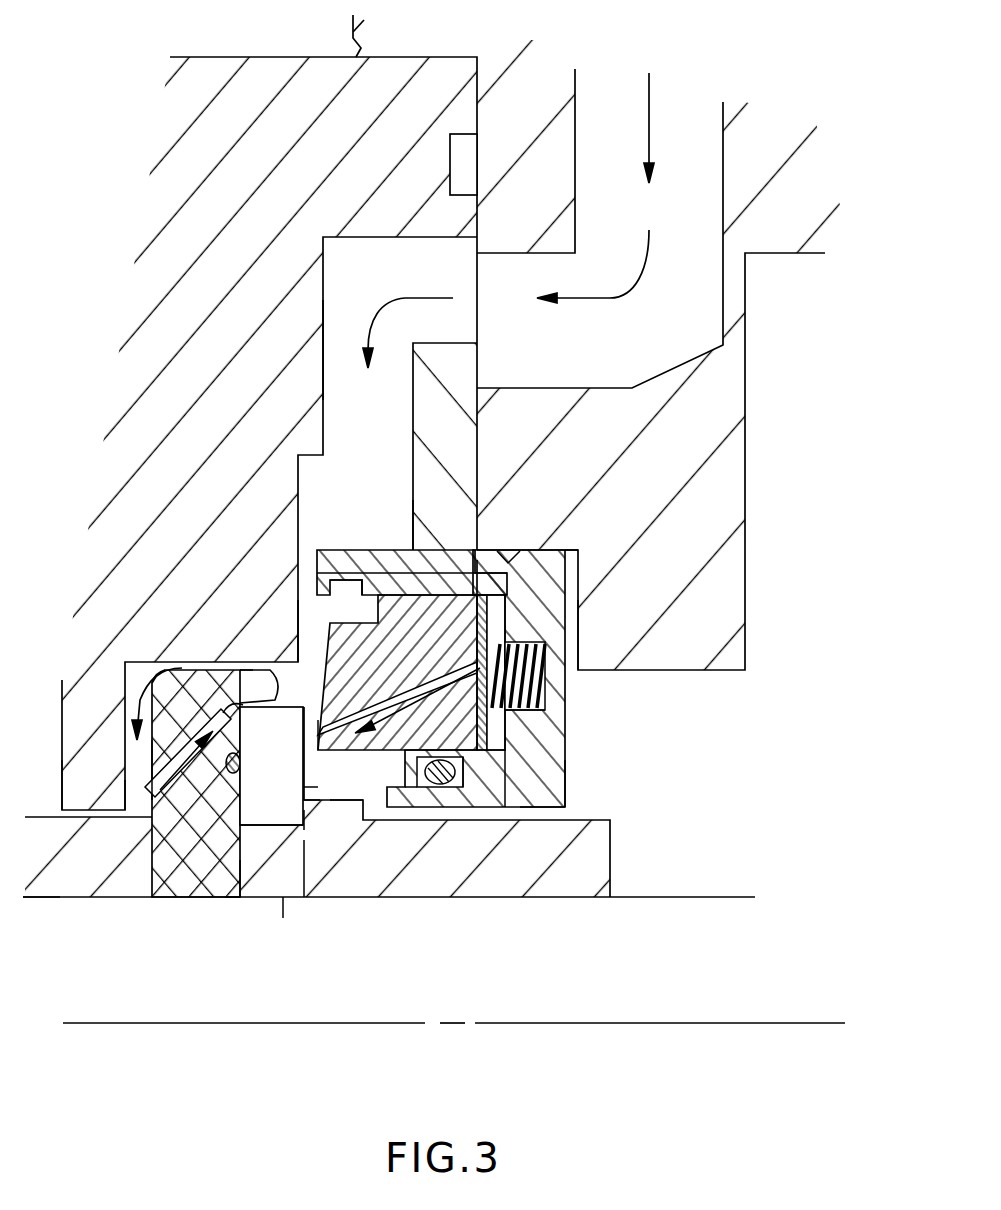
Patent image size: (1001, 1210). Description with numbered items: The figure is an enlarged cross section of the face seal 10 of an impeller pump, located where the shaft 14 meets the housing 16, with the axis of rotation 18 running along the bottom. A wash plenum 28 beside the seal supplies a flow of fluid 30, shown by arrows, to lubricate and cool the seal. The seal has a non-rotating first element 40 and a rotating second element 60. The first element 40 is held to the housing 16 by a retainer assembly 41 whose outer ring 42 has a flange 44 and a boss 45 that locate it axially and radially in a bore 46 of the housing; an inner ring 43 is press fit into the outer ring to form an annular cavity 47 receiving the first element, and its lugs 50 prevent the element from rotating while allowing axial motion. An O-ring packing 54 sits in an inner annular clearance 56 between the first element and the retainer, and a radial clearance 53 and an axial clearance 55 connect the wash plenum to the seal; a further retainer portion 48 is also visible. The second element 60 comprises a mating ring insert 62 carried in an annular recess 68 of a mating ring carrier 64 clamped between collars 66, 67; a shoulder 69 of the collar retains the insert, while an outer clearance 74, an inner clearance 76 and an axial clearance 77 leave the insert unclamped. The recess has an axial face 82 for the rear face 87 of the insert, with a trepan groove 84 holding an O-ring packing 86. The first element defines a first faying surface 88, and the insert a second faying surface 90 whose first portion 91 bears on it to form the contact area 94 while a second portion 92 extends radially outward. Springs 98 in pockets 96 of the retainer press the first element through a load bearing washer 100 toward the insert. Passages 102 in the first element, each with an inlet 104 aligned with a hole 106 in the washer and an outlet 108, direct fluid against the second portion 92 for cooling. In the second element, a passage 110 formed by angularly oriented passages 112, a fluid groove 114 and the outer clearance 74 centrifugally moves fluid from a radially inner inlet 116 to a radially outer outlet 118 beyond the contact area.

The face seal 10 is at (277, 700).
The shaft 14 is at (745, 897).
The housing 16 is at (745, 383).
The axis 18 is at (687, 1023).
The wash plenum 28 is at (384, 430).
The flow of fluid 30 is at (650, 108).
The first, non-rotating element 40 is at (404, 552).
The retainer assembly 41 is at (567, 763).
The outer ring 42 is at (567, 647).
The inner ring 43 is at (410, 513).
The flange 44 is at (470, 364).
The boss 45 is at (565, 548).
The bore 46 is at (514, 557).
The annular shaped cavity 47 is at (298, 634).
The lower flange 48 is at (555, 818).
The lugs 50 is at (367, 597).
The outer annular radial clearance 53 is at (478, 598).
The O-ring packing 54 is at (440, 787).
The annular axial clearance 55 is at (563, 783).
The inner annular clearance 56 is at (463, 757).
The second rotating element 60 is at (283, 940).
The mating ring insert 62 is at (277, 779).
The mating ring carrier 64 is at (191, 837).
The collar 66 is at (497, 820).
The collar 67 is at (37, 896).
The annular recess 68 is at (292, 875).
The shoulder 69 is at (312, 812).
The radially outer clearance 74 is at (388, 672).
The radially inner clearance 76 is at (307, 815).
The axial clearance 77 is at (308, 813).
The axial face 82 is at (280, 830).
The trepan groove 84 is at (230, 772).
The O-ring packing 86 is at (175, 875).
The rear face 87 is at (158, 680).
The first faying surface 88 is at (310, 807).
The second faying surface 90 is at (305, 788).
The first portion 91 is at (247, 827).
The second portion 92 is at (313, 730).
The contact area 94 is at (310, 810).
The pockets 96 is at (550, 688).
The springs 98 is at (540, 678).
The load bearing washer 100 is at (507, 593).
The passages 102 is at (497, 735).
The inlet 104 is at (403, 578).
The hole 106 is at (490, 640).
The outlet 108 is at (397, 672).
The passage 110 is at (62, 788).
The angularly oriented passages 112 is at (150, 773).
The fluid groove 114 is at (240, 703).
The radially inner inlet 116 is at (122, 805).
The radially outer outlet 118 is at (268, 697).